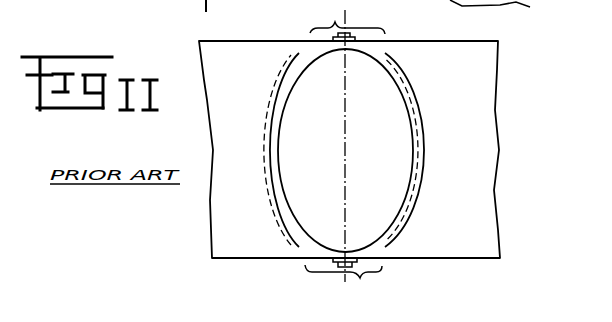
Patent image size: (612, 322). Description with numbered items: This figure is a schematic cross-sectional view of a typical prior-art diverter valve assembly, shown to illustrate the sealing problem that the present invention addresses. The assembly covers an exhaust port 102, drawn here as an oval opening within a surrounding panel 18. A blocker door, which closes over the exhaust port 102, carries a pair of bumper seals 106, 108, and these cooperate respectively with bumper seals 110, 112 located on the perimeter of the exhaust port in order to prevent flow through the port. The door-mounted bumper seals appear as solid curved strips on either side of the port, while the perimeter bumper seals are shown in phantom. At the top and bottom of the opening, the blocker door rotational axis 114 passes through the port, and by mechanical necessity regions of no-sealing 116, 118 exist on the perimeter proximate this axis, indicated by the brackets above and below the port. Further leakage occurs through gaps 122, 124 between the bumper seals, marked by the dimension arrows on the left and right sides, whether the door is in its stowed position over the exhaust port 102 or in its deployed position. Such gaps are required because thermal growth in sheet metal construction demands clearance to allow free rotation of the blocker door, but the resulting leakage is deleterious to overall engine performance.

The panel wall 18 is at (486, 213).
The exhaust port 102 is at (299, 74).
The bumper seal 106 is at (289, 80).
The bumper seal 108 is at (420, 107).
The bumper seal 110 is at (290, 58).
The bumper seal 112 is at (413, 117).
The blocker door rotational axis 114 is at (350, 24).
The region of no-sealing 116 is at (347, 17).
The region of no-sealing 118 is at (343, 279).
The gap 122 is at (279, 150).
The gap 124 is at (391, 150).